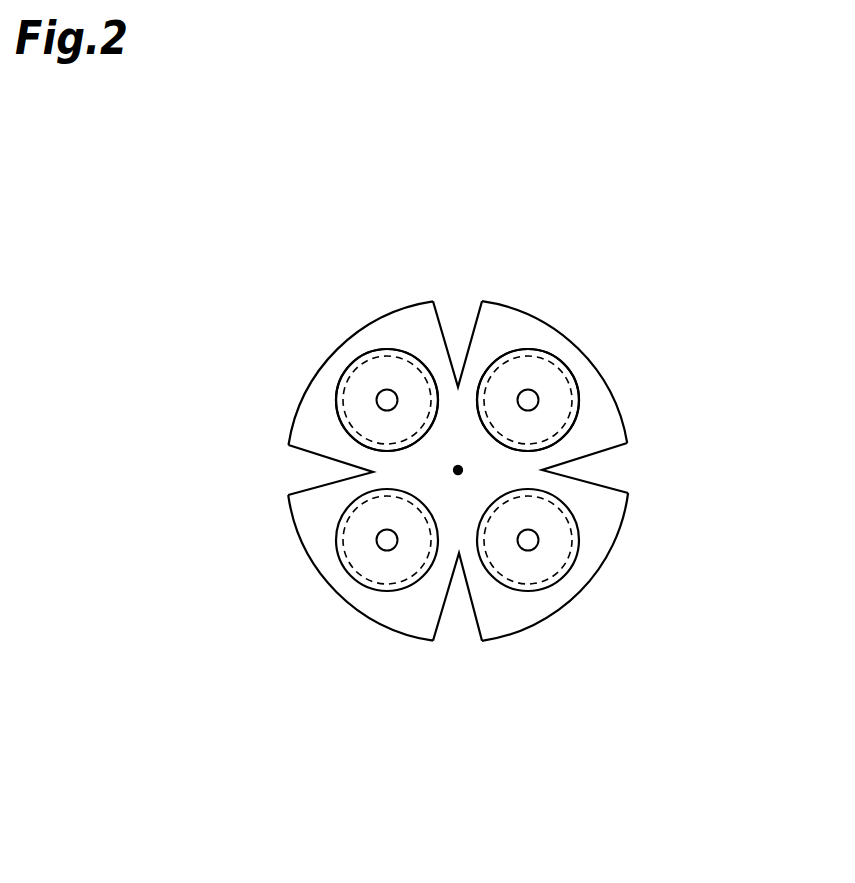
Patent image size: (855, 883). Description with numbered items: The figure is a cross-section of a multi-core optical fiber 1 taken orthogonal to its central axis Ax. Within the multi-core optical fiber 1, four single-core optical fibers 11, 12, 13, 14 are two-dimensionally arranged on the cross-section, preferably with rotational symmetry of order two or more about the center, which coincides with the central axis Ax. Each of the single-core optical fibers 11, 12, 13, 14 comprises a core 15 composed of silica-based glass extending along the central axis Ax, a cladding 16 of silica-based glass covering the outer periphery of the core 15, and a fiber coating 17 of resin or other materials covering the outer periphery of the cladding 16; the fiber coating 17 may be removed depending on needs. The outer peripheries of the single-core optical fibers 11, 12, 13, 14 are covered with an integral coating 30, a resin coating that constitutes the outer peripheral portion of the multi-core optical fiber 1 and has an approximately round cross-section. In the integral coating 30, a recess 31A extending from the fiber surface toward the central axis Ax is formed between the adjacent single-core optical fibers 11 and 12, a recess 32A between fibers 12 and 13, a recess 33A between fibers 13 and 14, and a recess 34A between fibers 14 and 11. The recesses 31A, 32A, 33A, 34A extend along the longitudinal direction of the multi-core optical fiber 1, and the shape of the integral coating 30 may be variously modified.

The multi-core optical fiber 1 is at (621, 187).
The single-core optical fiber 11 is at (323, 347).
The single-core optical fiber 12 is at (528, 346).
The single-core optical fiber 13 is at (583, 533).
The single-core optical fiber 14 is at (333, 533).
The core 15 is at (388, 404).
The cladding 16 is at (417, 392).
The fiber coating 17 is at (375, 360).
The integral coating 30 is at (405, 600).
The recess 31A is at (473, 336).
The recess 32A is at (600, 485).
The recess 33A is at (470, 600).
The recess 34A is at (323, 485).
The central axis Ax is at (459, 475).